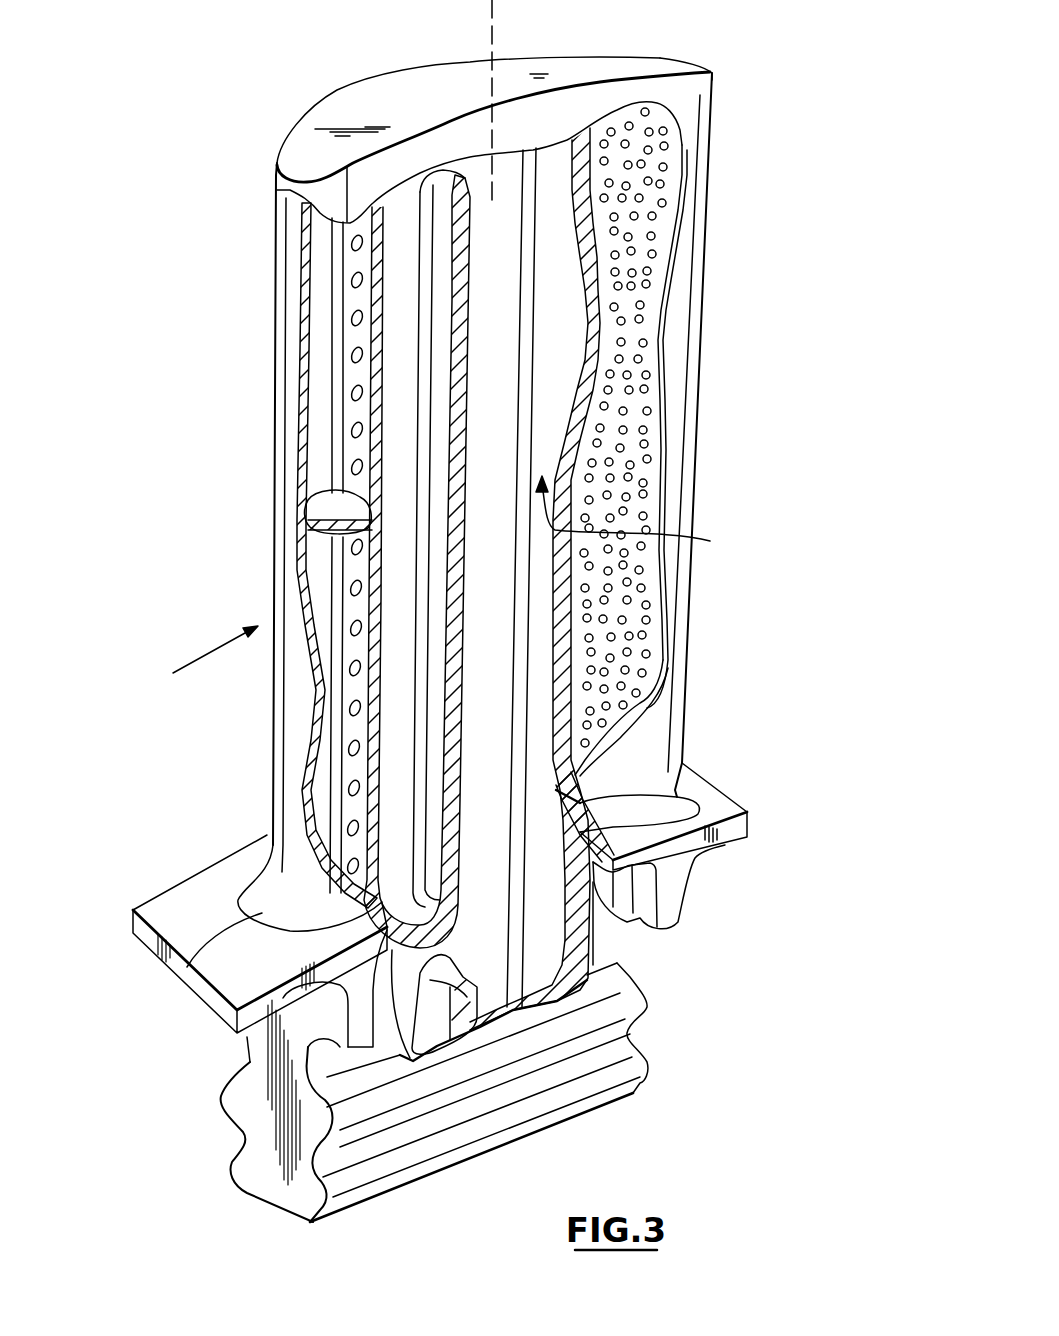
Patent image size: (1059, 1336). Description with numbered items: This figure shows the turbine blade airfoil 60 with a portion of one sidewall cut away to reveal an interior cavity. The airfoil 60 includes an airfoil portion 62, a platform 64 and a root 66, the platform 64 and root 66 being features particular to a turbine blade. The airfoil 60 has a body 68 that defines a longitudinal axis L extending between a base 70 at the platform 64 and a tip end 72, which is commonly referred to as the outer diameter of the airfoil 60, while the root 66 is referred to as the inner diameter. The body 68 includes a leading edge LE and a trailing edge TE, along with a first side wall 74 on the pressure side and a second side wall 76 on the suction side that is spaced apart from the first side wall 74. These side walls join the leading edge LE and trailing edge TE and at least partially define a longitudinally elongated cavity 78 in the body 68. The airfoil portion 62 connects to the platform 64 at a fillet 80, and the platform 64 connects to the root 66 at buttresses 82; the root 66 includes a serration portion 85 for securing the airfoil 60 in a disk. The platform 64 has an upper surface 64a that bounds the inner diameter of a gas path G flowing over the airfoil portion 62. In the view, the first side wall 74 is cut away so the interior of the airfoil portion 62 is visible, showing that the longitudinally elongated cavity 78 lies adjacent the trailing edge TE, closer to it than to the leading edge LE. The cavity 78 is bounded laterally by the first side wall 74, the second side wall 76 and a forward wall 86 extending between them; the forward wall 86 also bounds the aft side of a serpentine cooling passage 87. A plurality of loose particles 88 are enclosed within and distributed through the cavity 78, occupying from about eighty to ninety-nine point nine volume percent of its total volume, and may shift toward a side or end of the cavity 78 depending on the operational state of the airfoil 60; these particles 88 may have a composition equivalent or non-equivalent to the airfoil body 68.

The airfoil 60 is at (193, 720).
The airfoil portion 62 is at (676, 509).
The platform 64 is at (714, 808).
The upper surface 64a is at (681, 792).
The root 66 is at (621, 1072).
The body 68 is at (659, 697).
The base 70 is at (188, 967).
The tip end 72 is at (316, 147).
The first side wall 74 is at (694, 123).
The second side wall 76 is at (676, 67).
The longitudinally elongated cavity 78 is at (645, 290).
The fillet 80 is at (282, 880).
The buttresses 82 is at (345, 1017).
The serration portion 85 is at (340, 1160).
The forward wall 86 is at (562, 702).
The serpentine cooling passage 87 is at (639, 517).
The loose particles 88 is at (640, 440).
The longitudinal axis L is at (502, 143).
The leading edge LE is at (274, 313).
The trailing edge TE is at (706, 337).
The gas path G is at (205, 652).